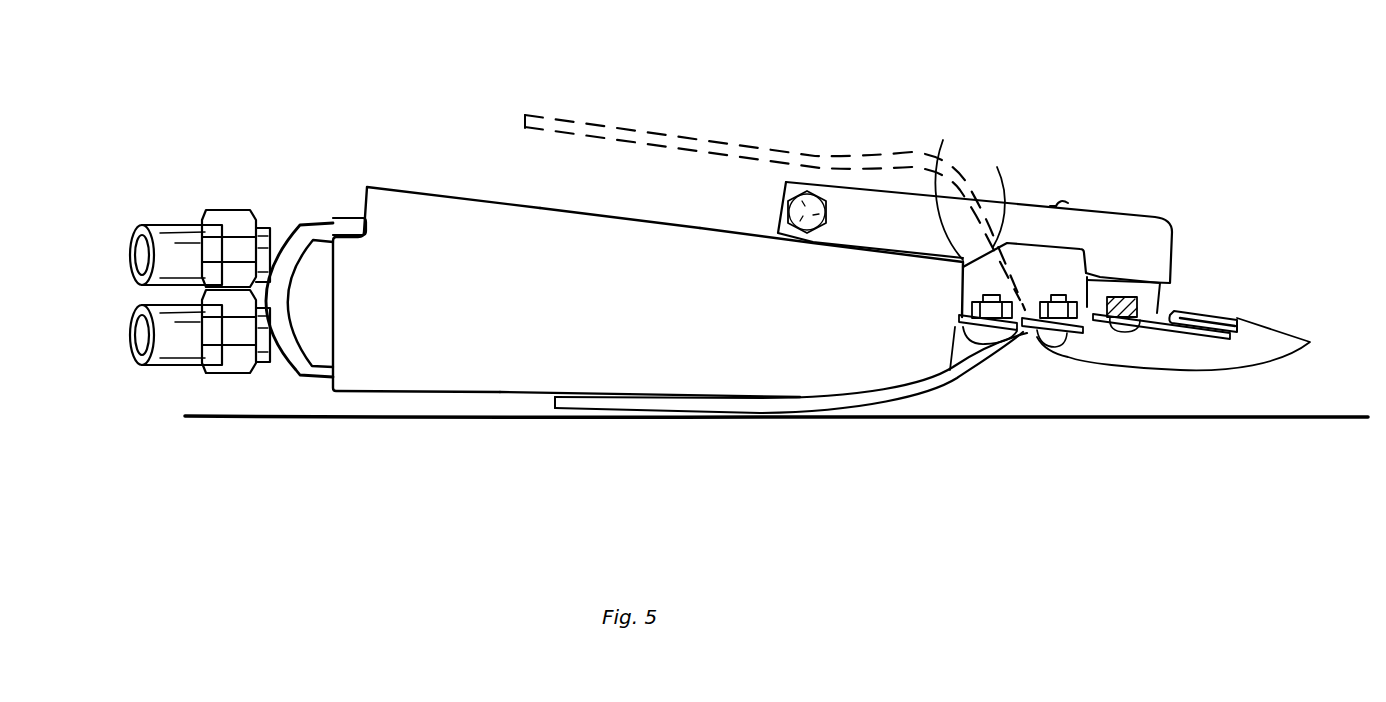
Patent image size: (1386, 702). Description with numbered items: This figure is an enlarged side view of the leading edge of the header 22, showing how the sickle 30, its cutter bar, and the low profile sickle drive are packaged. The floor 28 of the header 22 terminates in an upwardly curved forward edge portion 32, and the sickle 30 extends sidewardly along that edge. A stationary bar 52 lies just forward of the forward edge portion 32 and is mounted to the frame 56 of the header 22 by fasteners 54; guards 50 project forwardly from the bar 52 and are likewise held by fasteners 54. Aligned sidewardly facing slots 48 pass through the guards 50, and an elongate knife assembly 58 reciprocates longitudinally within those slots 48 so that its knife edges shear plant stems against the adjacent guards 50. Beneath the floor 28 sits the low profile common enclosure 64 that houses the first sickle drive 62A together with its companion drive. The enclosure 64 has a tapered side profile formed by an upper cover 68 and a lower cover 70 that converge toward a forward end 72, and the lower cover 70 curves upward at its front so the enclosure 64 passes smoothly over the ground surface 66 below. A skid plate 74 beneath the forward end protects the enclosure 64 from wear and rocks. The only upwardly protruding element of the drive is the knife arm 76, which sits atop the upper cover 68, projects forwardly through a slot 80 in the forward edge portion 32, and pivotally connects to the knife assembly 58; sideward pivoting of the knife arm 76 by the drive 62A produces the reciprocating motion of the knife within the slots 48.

The header 22 is at (272, 178).
The floor 28 is at (713, 137).
The sickle 30 is at (1203, 310).
The forward edge portion 32 is at (1013, 276).
The slots 48 is at (1243, 317).
The guards 50 is at (1272, 362).
The stationary bar 52 is at (1049, 337).
The fasteners 54 is at (1067, 297).
The frame 56 is at (990, 355).
The knife assembly 58 is at (1160, 333).
The first sickle drive 62A is at (1075, 200).
The enclosure 64 is at (460, 197).
The ground surface 66 is at (1337, 415).
The upper cover 68 is at (598, 214).
The lower cover 70 is at (487, 395).
The forward end 72 is at (947, 187).
The skid plate 74 is at (880, 407).
The knife arm 76 is at (890, 190).
The slots 80 is at (999, 193).